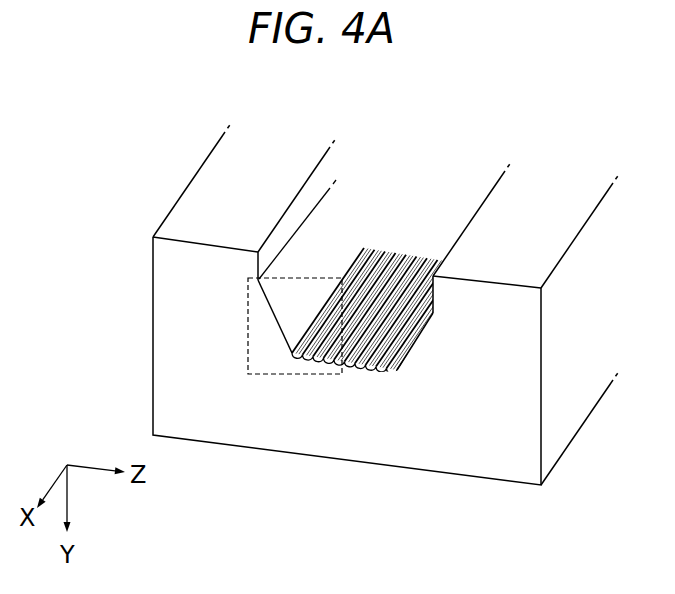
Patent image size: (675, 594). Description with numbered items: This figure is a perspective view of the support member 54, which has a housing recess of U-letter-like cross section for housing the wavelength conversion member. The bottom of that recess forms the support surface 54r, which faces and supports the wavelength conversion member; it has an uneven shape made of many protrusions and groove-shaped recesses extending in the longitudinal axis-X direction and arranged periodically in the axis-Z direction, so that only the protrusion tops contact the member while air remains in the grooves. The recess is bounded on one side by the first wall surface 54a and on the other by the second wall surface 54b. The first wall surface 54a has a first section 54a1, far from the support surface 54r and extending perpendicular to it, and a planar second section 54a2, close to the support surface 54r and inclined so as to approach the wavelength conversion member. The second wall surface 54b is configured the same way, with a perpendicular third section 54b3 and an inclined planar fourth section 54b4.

The support member 54 is at (124, 211).
The first wall surface 54a is at (263, 289).
The first section 54a1 is at (280, 307).
The second section 54a2 is at (288, 224).
The second wall surface 54b is at (483, 311).
The third section 54b3 is at (464, 227).
The fourth section 54b4 is at (407, 347).
The support surface 54r is at (410, 240).